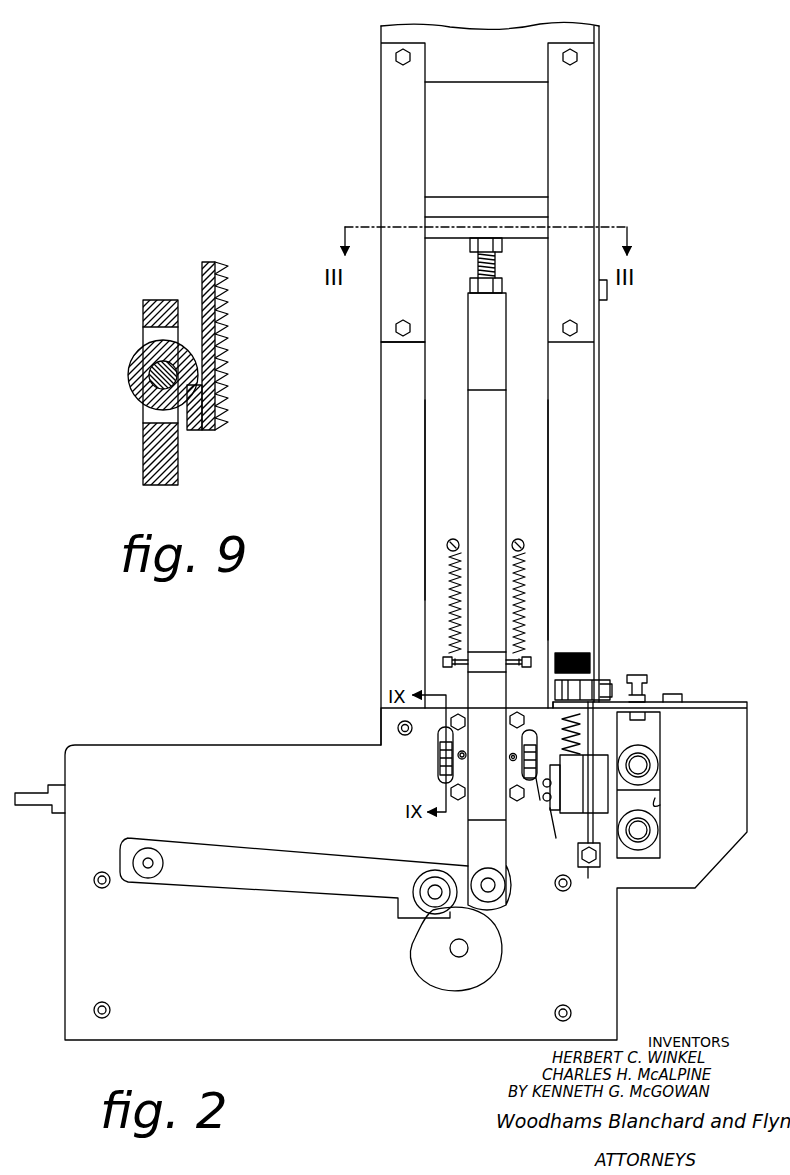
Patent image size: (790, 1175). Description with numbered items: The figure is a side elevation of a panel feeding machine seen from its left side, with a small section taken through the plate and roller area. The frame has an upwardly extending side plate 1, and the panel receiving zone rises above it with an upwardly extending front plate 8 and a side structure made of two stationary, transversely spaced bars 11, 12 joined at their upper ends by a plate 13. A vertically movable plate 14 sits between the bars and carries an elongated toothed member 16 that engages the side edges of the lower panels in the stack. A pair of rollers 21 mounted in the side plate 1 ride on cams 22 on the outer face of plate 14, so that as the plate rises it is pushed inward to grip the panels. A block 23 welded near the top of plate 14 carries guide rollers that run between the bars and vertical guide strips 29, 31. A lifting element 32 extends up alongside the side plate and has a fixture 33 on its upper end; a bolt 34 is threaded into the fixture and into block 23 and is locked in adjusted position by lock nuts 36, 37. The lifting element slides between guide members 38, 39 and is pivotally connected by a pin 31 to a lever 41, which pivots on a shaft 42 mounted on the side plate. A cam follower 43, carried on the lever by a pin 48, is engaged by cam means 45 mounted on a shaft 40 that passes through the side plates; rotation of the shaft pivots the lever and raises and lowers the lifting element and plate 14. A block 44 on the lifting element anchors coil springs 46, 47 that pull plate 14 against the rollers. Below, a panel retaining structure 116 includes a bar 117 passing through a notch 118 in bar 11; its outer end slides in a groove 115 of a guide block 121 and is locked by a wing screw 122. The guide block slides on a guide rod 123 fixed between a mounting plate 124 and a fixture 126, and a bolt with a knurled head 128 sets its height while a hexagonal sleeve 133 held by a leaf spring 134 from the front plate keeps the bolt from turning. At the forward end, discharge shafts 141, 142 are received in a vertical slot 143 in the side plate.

In FIG. 2, the side plate 1 is at (368, 970).
In FIG. 9, the side plate 1 is at (160, 470).
In FIG. 2, the front plate 8 is at (600, 388).
In FIG. 2, the bar 11 is at (572, 512).
In FIG. 2, the bar 12 is at (392, 362).
In FIG. 2, the plate 13 is at (476, 38).
In FIG. 2, the vertically movable plate 14 is at (440, 455).
In FIG. 9, the vertically movable plate 14 is at (205, 268).
In FIG. 9, the toothed member 16 is at (216, 265).
In FIG. 2, the rollers 21 is at (440, 775).
In FIG. 9, the rollers 21 is at (140, 363).
In FIG. 9, the cams 22 is at (195, 425).
In FIG. 2, the block 23 is at (450, 240).
In FIG. 2, the guide strip 29 is at (570, 128).
In FIG. 2, the guide strip / pin 31 is at (395, 153).
In FIG. 2, the lifting element 32 is at (482, 500).
In FIG. 2, the fixture 33 is at (482, 352).
In FIG. 2, the bolt 34 is at (497, 272).
In FIG. 2, the lock nut 36 is at (470, 290).
In FIG. 2, the lock nut 37 is at (487, 238).
In FIG. 2, the guide member 38 is at (462, 742).
In FIG. 2, the guide member 39 is at (515, 768).
In FIG. 2, the shaft 40 is at (468, 950).
In FIG. 2, the lever 41 is at (297, 882).
In FIG. 2, the shaft 42 is at (150, 868).
In FIG. 2, the cam follower 43 is at (425, 875).
In FIG. 2, the block 44 is at (480, 665).
In FIG. 2, the cam means 45 is at (465, 978).
In FIG. 2, the coil spring 46 is at (522, 605).
In FIG. 2, the coil spring 47 is at (455, 600).
In FIG. 2, the pin 48 is at (428, 892).
In FIG. 2, the groove 115 is at (560, 778).
In FIG. 2, the panel retaining structure 116 is at (556, 840).
In FIG. 2, the bar 117 is at (558, 808).
In FIG. 2, the notch 118 is at (555, 740).
In FIG. 2, the guide block 121 is at (603, 820).
In FIG. 2, the wing screw 122 is at (547, 805).
In FIG. 2, the guide rod 123 is at (592, 735).
In FIG. 2, the mounting plate 124 is at (557, 708).
In FIG. 2, the fixture 126 is at (586, 875).
In FIG. 2, the knurled head 128 is at (572, 653).
In FIG. 2, the sleeve 133 is at (575, 683).
In FIG. 2, the leaf spring 134 is at (600, 690).
In FIG. 2, the shaft 141 is at (648, 762).
In FIG. 2, the shaft 142 is at (648, 830).
In FIG. 2, the slot 143 is at (660, 800).